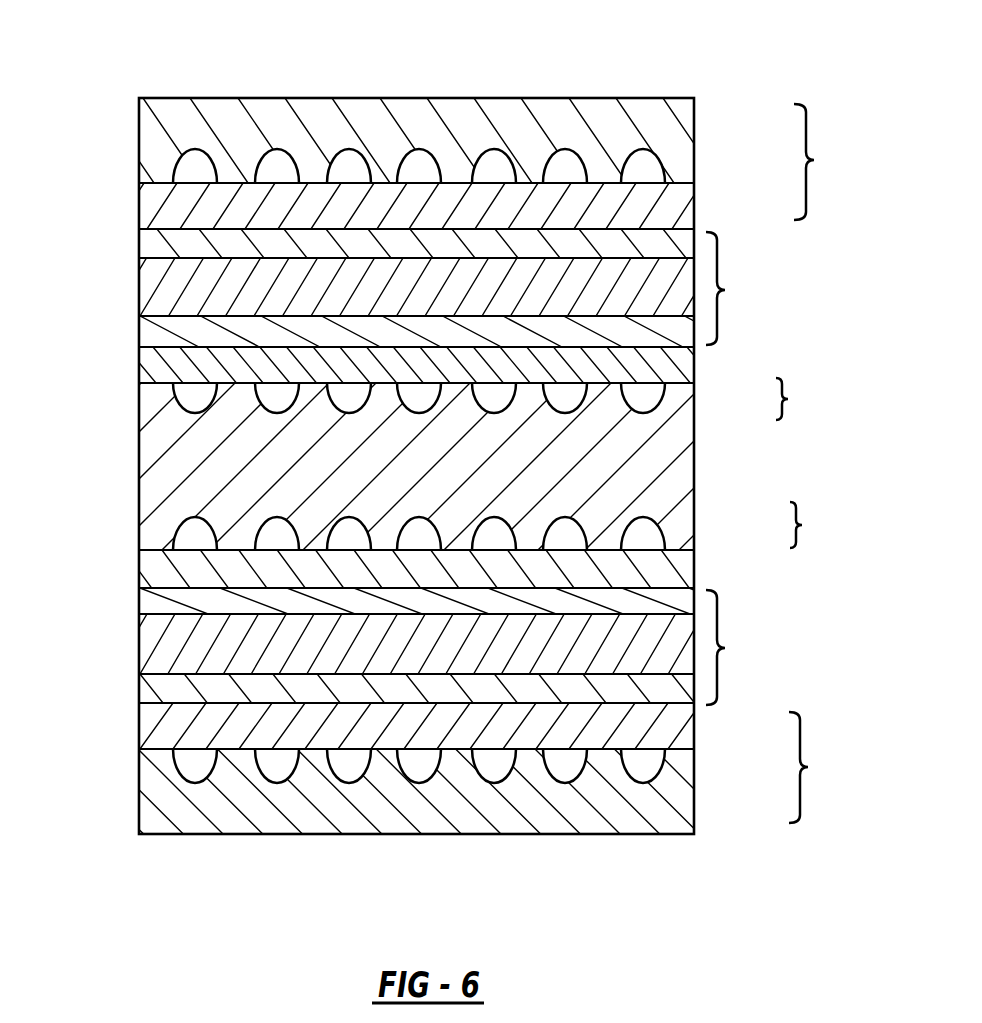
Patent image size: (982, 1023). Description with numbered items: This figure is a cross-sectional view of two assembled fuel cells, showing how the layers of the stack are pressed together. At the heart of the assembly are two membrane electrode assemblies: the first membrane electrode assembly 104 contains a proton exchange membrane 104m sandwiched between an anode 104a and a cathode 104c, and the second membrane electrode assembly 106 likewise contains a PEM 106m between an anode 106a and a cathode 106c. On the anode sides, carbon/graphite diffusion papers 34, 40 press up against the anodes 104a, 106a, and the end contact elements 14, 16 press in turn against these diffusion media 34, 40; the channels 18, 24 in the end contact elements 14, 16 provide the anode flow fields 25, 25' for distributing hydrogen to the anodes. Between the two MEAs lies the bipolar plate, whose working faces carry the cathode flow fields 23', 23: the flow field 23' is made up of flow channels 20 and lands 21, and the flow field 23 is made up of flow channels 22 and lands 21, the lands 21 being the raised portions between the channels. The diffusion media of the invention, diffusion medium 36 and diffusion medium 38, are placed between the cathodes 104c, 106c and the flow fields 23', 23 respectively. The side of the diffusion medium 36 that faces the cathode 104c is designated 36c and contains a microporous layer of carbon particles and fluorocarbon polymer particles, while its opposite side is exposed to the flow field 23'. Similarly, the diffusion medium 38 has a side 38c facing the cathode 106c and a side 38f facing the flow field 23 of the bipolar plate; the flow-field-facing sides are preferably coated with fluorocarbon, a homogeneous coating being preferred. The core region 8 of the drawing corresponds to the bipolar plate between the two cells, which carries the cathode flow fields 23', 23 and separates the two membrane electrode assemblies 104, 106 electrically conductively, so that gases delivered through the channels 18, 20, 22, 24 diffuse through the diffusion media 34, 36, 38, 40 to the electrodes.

The core layer 8 is at (696, 465).
The end contact element 14 is at (698, 124).
The end contact element 16 is at (692, 810).
The grooves or channels 18 is at (640, 173).
The flow channels 20 is at (641, 398).
The lands 21 is at (610, 183).
The flow channels 22 is at (640, 540).
The cathode flow field 23 is at (808, 525).
The cathode flow field 23' is at (796, 399).
The grooves or channels 24 is at (643, 765).
The anode flow field 25 is at (811, 767).
The anode flow field 25' is at (818, 162).
The diffusion paper 34 is at (698, 205).
The diffusion medium 36 is at (696, 364).
The cathode-facing side of diffusion medium 36c is at (146, 356).
The diffusion medium 38 is at (696, 568).
The cathode-facing side of diffusion medium 38c is at (146, 577).
The flow-field-facing side of diffusion medium 38f is at (143, 371).
The diffusion paper 40 is at (692, 730).
The membrane electrode assembly 104 is at (734, 288).
The anode 104a is at (134, 241).
The proton exchange membrane 104m is at (134, 286).
The cathode 104c is at (134, 330).
The membrane electrode assembly 106 is at (733, 647).
The anode 106a is at (134, 692).
The proton exchange membrane 106m is at (134, 644).
The cathode 106c is at (134, 605).